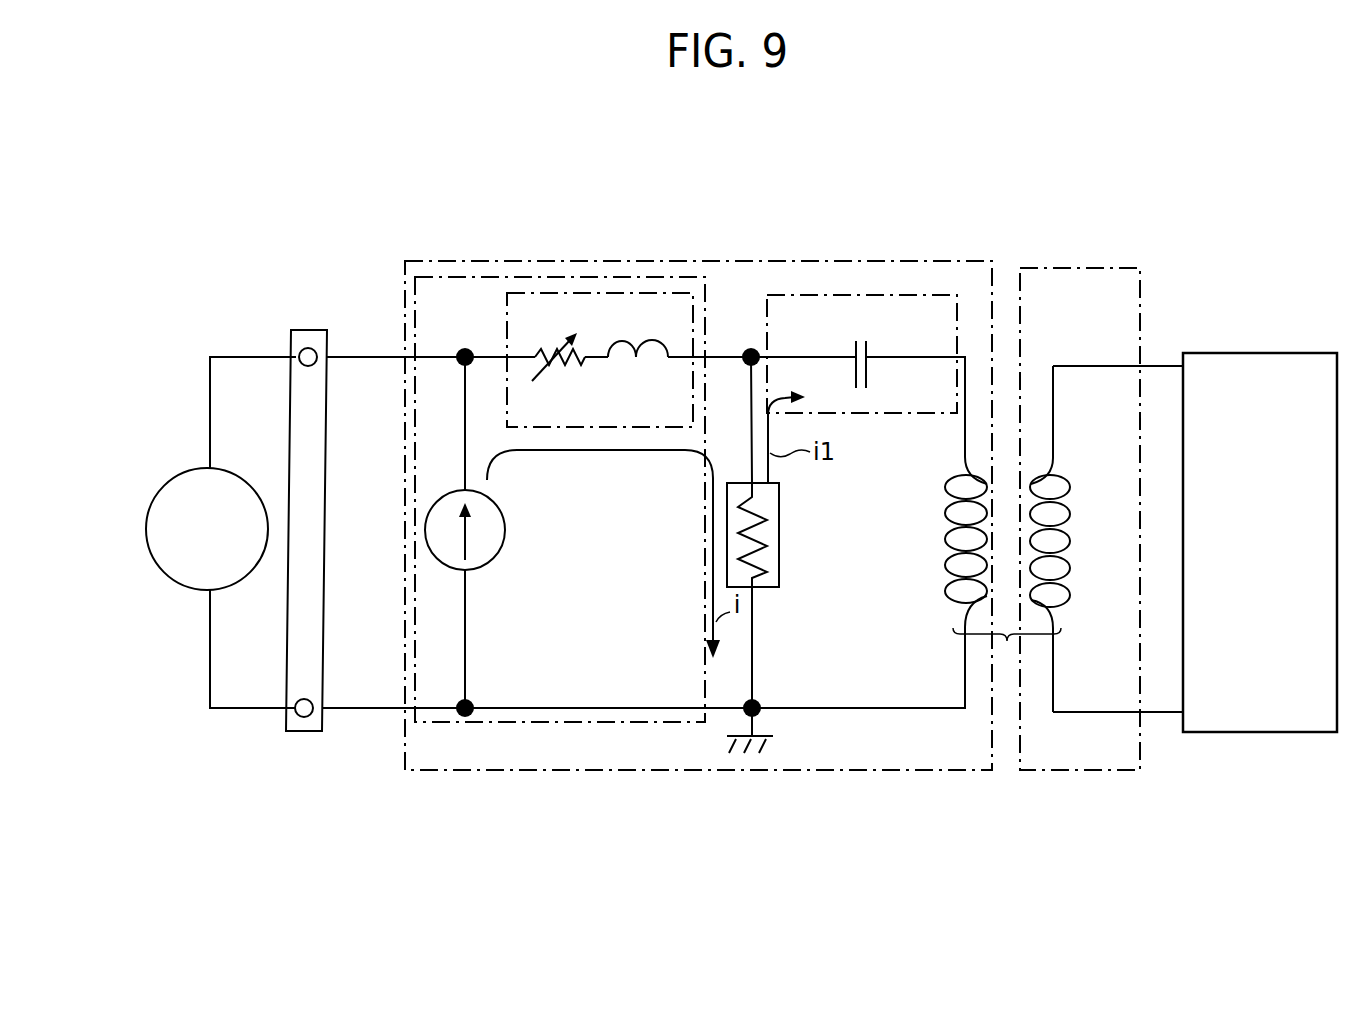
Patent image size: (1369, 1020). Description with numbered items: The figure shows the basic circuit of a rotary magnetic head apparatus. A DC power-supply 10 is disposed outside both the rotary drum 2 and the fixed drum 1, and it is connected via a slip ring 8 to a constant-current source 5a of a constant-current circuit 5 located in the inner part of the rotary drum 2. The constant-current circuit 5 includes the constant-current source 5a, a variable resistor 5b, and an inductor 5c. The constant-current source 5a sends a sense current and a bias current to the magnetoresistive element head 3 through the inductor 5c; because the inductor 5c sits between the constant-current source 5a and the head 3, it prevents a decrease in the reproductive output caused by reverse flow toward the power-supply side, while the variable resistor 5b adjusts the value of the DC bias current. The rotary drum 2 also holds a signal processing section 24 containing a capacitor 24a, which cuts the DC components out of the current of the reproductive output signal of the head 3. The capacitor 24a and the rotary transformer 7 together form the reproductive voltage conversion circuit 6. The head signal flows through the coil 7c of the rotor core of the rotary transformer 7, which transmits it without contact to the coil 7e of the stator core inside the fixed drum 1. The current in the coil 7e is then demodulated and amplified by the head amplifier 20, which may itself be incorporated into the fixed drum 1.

The fixed drum 1 is at (1070, 268).
The rotary drum 2 is at (567, 260).
The magnetoresistive element head 3 is at (779, 563).
The constant-current circuit 5 is at (528, 723).
The constant-current source 5a is at (505, 530).
The variable resistor 5b is at (573, 366).
The inductor 5c is at (648, 362).
The reproductive voltage conversion circuit 6 is at (828, 738).
The rotary transformer 7 is at (1007, 656).
The coil of the rotor core 7c is at (945, 515).
The coil of the stator core 7e is at (1060, 479).
The slip ring 8 is at (308, 330).
The DC power-supply 10 is at (155, 494).
The head amplifier 20 is at (1243, 733).
The signal processing section 24 is at (706, 316).
The capacitor 24a is at (868, 372).